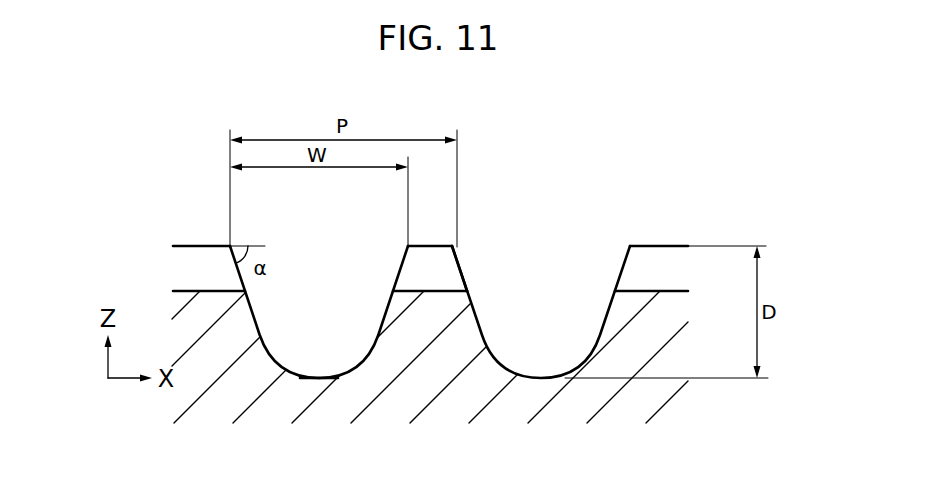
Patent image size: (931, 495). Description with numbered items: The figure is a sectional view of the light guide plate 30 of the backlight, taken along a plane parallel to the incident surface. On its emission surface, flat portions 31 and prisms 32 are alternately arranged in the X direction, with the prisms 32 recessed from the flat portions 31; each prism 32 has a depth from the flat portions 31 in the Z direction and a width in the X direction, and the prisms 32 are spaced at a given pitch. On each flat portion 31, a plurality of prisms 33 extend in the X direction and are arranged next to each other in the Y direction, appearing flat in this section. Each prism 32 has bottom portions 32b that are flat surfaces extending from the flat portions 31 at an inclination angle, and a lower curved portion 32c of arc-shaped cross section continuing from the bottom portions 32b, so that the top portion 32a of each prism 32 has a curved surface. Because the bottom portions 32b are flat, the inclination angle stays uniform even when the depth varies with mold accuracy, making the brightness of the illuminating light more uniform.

The light guide plate 30 is at (630, 395).
The flat portion 31 is at (438, 246).
The prism 32 is at (272, 362).
The top portion 32a is at (318, 380).
The bottom portion 32b is at (390, 302).
The curved portion 32c is at (360, 365).
The prism 33 is at (453, 277).